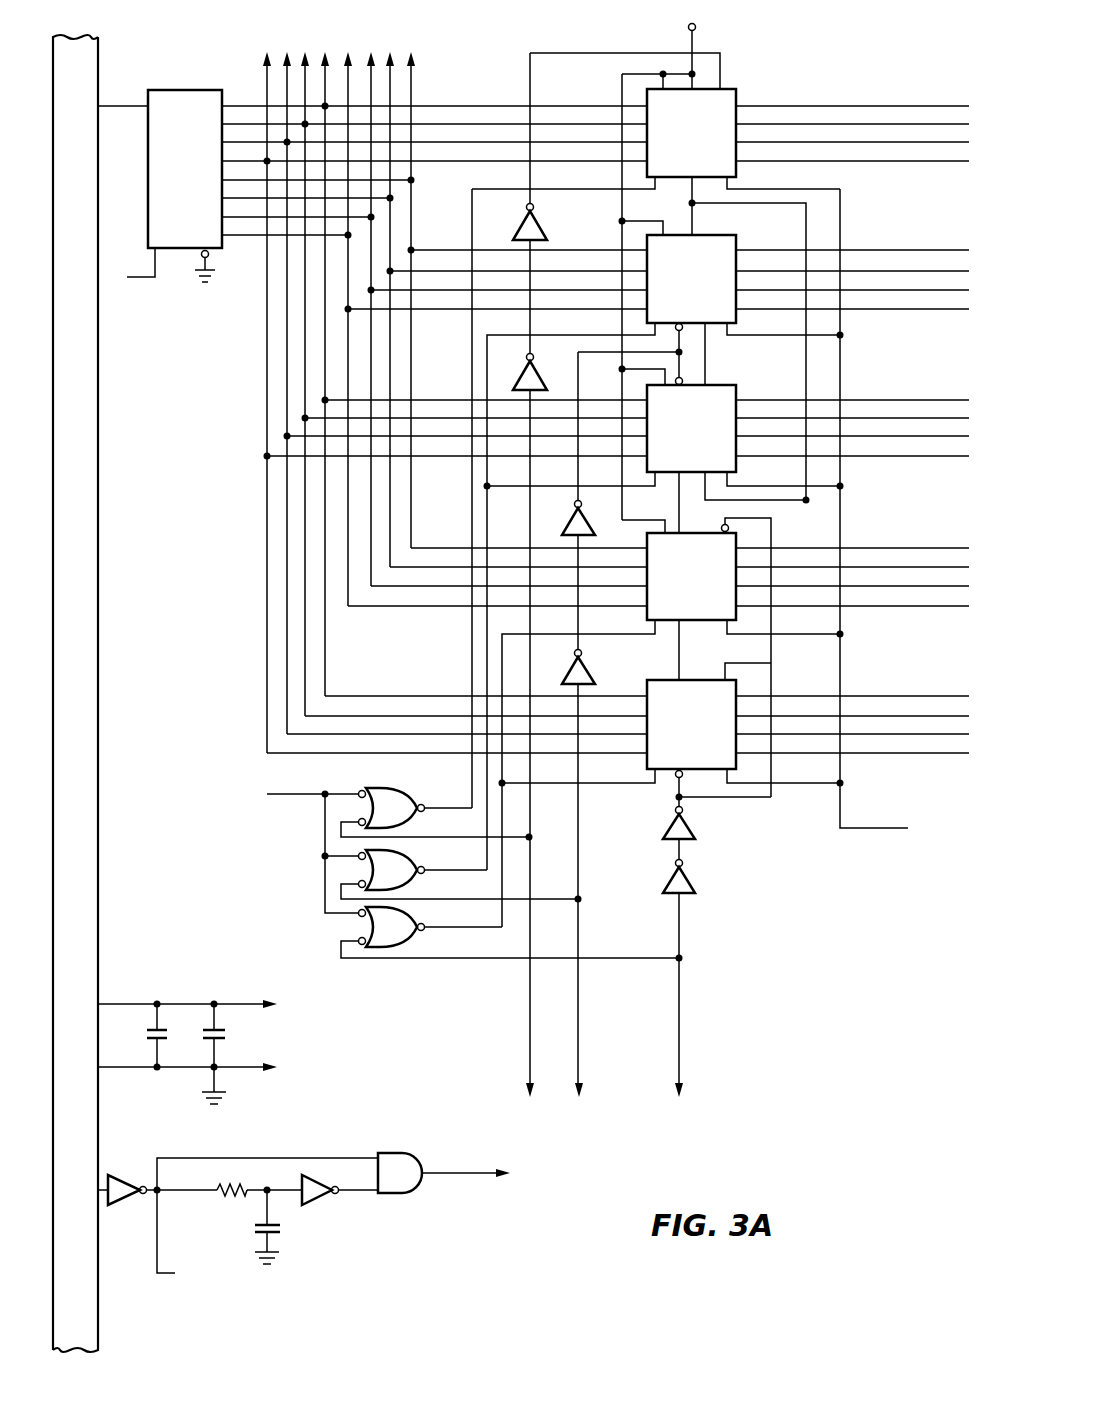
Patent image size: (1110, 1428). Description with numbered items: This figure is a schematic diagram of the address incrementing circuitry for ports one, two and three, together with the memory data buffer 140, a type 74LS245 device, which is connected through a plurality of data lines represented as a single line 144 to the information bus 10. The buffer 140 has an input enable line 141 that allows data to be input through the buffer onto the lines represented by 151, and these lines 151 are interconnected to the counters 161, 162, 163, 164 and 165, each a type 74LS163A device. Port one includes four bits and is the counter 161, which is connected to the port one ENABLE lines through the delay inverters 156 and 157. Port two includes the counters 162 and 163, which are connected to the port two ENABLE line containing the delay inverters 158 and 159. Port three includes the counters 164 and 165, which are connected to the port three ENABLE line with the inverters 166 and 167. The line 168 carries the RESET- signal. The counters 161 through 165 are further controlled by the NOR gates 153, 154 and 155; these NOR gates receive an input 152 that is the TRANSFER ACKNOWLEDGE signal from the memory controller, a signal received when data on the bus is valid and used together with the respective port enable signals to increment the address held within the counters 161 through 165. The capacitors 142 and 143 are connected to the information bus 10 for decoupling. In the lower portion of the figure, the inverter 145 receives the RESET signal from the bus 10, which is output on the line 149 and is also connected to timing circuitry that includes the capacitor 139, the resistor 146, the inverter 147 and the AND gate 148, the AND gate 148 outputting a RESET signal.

The information bus 10 is at (72, 37).
The capacitor 139 is at (288, 1221).
The memory data buffer 140 is at (185, 186).
The input enable line 141 is at (128, 281).
The capacitor 142 is at (151, 1038).
The capacitor 143 is at (226, 1031).
The data lines 144 is at (116, 105).
The inverter 145 is at (122, 1174).
The resistor 146 is at (218, 1195).
The inverter 147 is at (321, 1201).
The AND gate 148 is at (333, 1173).
The line 149 is at (176, 1274).
The lines 151 is at (420, 49).
The input 152 is at (299, 795).
The NOR gate 153 is at (392, 808).
The NOR gate 154 is at (392, 870).
The NOR gate 155 is at (392, 927).
The delay inverter 156 is at (541, 223).
The delay inverter 157 is at (545, 382).
The delay inverter 158 is at (568, 521).
The delay inverter 159 is at (598, 678).
The counter 161 is at (691, 133).
The counter 162 is at (691, 283).
The counter 163 is at (691, 425).
The counter 164 is at (691, 573).
The counter 165 is at (691, 729).
The inverter 166 is at (698, 836).
The inverter 167 is at (698, 894).
The line 168 is at (908, 828).